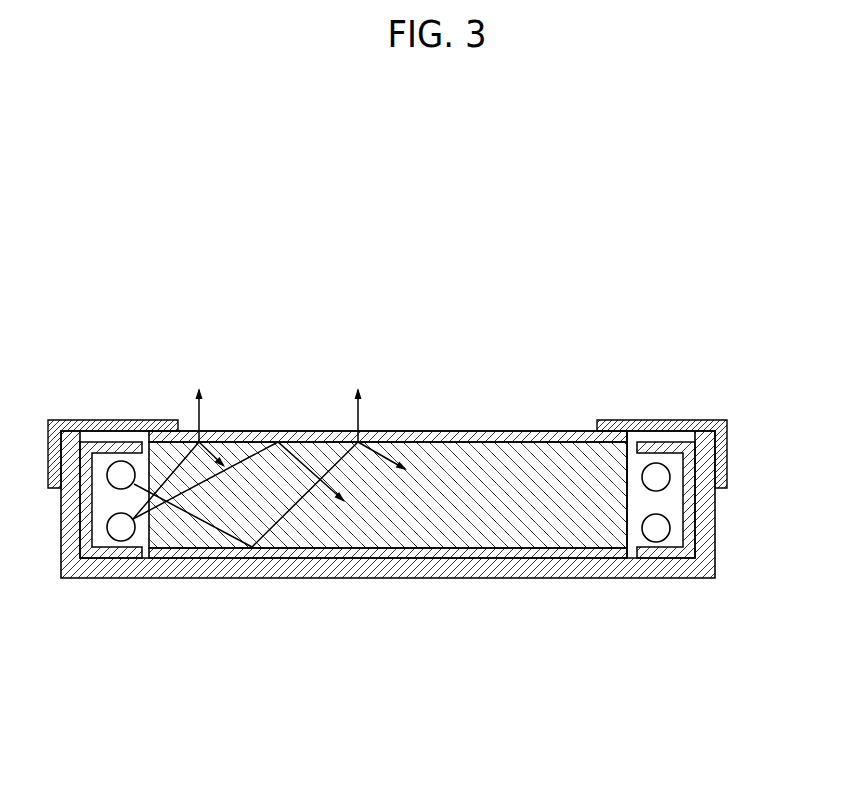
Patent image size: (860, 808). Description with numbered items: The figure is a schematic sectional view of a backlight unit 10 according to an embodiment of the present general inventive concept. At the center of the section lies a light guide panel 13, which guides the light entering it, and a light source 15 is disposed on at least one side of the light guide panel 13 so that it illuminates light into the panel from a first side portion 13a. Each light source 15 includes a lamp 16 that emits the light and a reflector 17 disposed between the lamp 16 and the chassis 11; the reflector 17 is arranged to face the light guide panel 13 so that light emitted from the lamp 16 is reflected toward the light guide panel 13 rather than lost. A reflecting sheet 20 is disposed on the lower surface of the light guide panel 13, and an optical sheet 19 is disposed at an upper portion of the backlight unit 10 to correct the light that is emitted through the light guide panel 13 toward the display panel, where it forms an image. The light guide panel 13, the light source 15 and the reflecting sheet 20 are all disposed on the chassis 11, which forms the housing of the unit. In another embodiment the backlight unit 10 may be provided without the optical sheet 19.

The backlight unit 10 is at (631, 363).
The chassis 11 is at (647, 578).
The light guide panel 13 is at (541, 455).
The first side portion 13a is at (628, 460).
The light source 15 is at (457, 500).
The lamp 16 is at (658, 532).
The reflector 17 is at (693, 488).
The optical sheet 19 is at (487, 437).
The reflecting sheet 20 is at (497, 559).